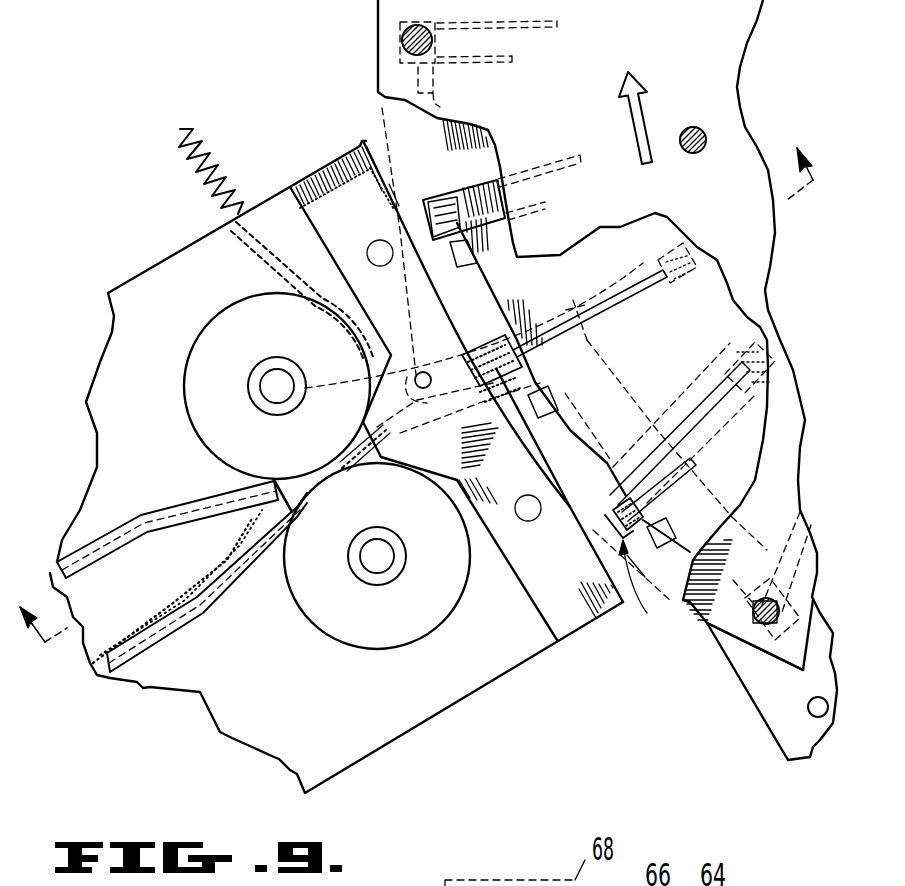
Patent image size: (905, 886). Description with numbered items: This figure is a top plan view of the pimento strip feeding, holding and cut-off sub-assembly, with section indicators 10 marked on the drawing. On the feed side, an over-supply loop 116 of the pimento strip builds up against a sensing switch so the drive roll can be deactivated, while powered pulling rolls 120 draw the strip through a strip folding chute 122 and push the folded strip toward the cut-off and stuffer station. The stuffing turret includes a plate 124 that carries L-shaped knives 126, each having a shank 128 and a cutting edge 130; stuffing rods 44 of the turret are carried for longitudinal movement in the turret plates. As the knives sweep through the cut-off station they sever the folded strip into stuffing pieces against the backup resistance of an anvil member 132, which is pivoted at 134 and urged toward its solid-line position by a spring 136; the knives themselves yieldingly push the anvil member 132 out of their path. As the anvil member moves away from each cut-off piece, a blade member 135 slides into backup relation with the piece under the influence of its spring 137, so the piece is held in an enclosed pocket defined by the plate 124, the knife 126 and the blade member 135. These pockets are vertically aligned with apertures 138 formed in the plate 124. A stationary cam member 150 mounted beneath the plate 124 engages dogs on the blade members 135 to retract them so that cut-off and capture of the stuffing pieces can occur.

The section line / viewing direction 10 is at (412, 377).
The stuffing rods 44 is at (762, 615).
The over-supply loop 116 is at (158, 591).
The powered pulling rolls 120 is at (228, 312).
The strip folding chute 122 is at (162, 503).
The plate 124 is at (738, 67).
The L-shaped knives 126 is at (638, 598).
The shanks 128 is at (697, 460).
The cutting edges 130 is at (607, 512).
The anvil member 132 is at (490, 352).
The pivot 134 is at (420, 372).
The blade member 135 is at (438, 200).
The spring 136 is at (213, 160).
The spring 137 is at (667, 250).
The apertures 138 is at (402, 38).
The stationary cam member 150 is at (630, 393).